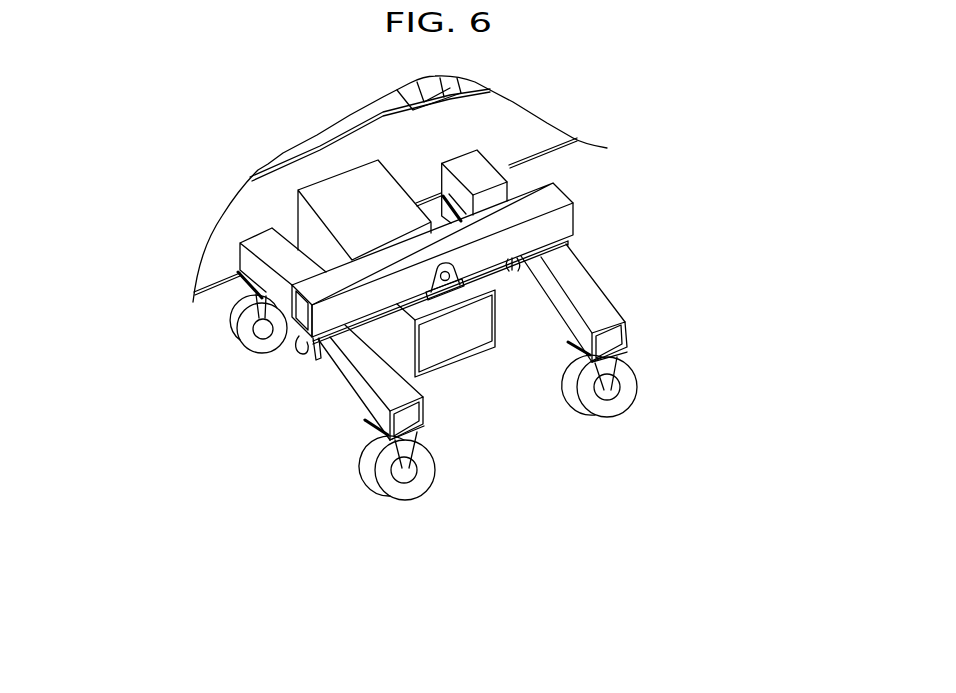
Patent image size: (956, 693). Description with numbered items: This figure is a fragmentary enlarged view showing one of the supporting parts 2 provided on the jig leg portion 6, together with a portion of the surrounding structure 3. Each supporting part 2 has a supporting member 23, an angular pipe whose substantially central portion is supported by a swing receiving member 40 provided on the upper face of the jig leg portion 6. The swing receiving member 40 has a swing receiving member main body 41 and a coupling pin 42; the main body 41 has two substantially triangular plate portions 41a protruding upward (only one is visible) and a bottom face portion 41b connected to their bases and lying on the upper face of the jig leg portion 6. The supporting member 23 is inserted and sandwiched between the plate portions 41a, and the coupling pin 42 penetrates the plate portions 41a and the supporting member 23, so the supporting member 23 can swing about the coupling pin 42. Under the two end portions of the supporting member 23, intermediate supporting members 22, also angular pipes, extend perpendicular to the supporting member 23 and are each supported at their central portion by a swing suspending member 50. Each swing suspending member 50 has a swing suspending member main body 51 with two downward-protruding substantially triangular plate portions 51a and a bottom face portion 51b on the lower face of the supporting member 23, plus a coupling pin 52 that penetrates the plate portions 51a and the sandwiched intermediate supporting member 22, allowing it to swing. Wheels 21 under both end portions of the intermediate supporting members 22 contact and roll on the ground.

The supporting part 2 is at (422, 351).
The rail structure 3 is at (588, 147).
The jig leg portion 6 is at (489, 353).
The wheel 21 is at (230, 318).
The intermediate supporting member 22 is at (613, 304).
The supporting member 23 is at (575, 220).
The swing receiving member 40 is at (476, 256).
The swing receiving member main body 41 is at (476, 254).
The plate portion 41a is at (443, 203).
The bottom face portion 41b is at (464, 300).
The coupling pin 42 is at (437, 267).
The swing suspending member 50 is at (585, 249).
The swing suspending member main body 51 is at (433, 307).
The plate portion 51a is at (319, 362).
The bottom face portion 51b is at (343, 336).
The coupling pin 52 is at (299, 348).